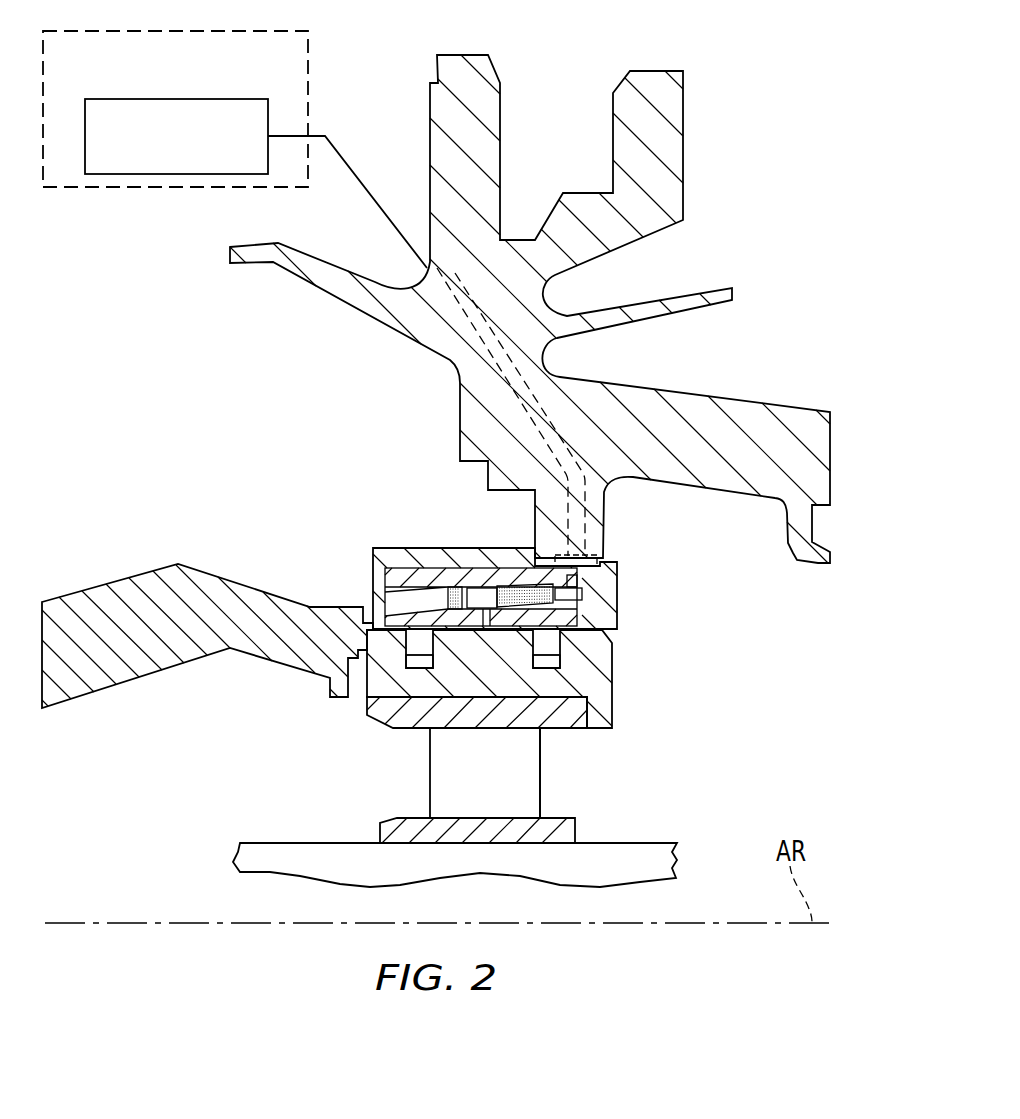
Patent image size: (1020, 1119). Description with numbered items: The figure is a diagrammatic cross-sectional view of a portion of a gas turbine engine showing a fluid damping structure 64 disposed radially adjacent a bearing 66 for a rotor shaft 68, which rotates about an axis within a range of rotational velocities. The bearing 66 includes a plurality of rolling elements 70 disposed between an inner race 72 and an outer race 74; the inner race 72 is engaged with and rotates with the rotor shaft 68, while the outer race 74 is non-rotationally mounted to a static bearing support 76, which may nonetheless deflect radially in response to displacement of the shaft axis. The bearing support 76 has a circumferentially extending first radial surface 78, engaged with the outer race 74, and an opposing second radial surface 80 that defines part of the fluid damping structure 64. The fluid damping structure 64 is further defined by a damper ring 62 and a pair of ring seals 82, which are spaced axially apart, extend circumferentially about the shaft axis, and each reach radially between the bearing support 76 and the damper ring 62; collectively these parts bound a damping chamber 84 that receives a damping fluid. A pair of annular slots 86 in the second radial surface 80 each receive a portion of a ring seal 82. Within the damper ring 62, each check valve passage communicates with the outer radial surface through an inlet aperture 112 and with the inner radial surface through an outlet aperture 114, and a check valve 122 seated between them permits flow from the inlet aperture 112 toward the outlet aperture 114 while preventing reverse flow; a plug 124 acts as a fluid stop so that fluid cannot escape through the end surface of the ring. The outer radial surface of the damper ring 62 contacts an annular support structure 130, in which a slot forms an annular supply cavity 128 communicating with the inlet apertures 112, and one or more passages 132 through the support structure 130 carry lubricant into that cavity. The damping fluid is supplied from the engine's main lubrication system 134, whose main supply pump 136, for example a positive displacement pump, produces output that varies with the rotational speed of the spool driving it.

The damper ring 62 is at (660, 628).
The fluid damping structure 64 is at (660, 668).
The bearing 66 is at (325, 771).
The rotor shaft 68 is at (275, 843).
The rolling elements 70 is at (503, 797).
The inner race 72 is at (567, 833).
The outer race 74 is at (548, 728).
The bearing support 76 is at (287, 667).
The first radial surface 78 is at (405, 717).
The second radial surface 80 is at (603, 612).
The ring seals 82 is at (418, 642).
The damping chamber 84 is at (500, 637).
The annular slots 86 is at (415, 668).
The inlet aperture 112 is at (577, 580).
The outlet aperture 114 is at (445, 600).
The check valve 122 is at (520, 590).
The plug 124 is at (455, 590).
The annular supply cavity 128 is at (597, 548).
The annular support structure 130 is at (500, 561).
The passages 132 is at (477, 337).
The main lubrication system 134 is at (310, 47).
The main supply pump 136 is at (128, 175).